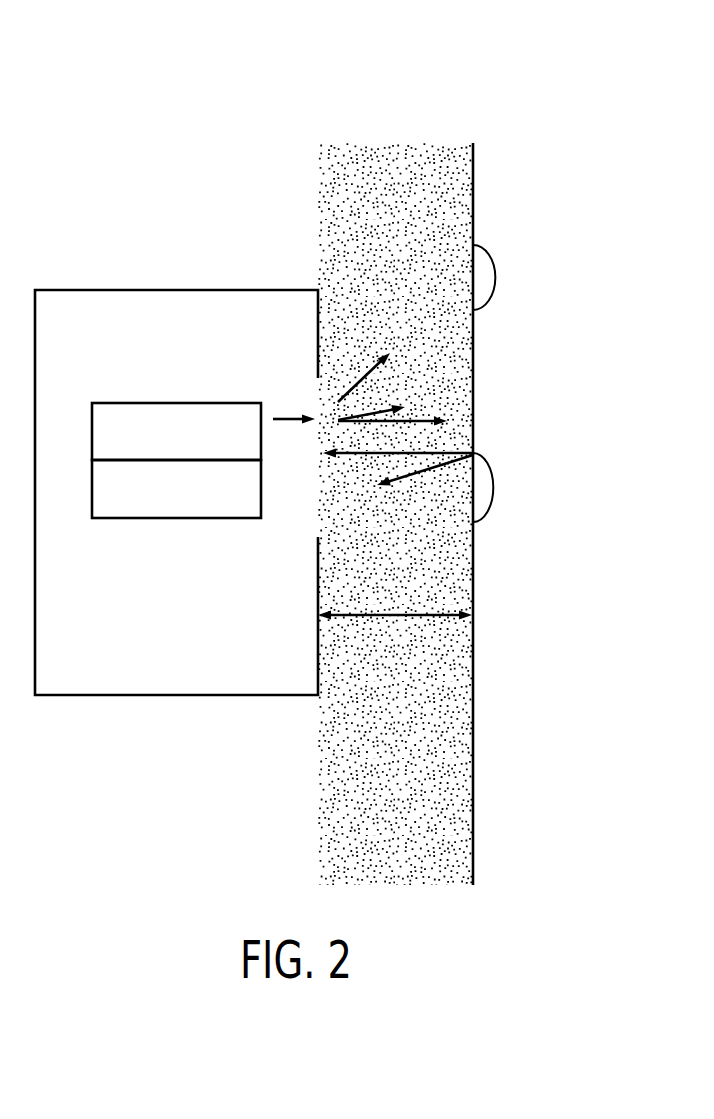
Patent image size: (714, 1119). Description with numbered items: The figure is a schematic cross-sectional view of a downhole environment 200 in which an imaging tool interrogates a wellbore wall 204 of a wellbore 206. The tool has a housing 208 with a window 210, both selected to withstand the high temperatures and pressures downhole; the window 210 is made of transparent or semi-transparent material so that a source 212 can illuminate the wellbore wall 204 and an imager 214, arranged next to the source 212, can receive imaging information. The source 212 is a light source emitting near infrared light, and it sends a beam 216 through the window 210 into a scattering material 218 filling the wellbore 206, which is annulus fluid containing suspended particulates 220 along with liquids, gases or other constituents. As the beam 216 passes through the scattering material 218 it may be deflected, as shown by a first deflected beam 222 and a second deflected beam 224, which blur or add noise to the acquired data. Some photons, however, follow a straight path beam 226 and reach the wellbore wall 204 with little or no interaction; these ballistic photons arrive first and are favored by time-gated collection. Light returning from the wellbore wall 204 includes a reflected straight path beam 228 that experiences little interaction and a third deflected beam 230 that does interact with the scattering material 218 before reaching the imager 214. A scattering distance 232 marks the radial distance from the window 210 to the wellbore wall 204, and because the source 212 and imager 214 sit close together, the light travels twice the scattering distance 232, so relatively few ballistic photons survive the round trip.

The downhole environment 200 is at (333, 483).
The wellbore wall 204 is at (473, 207).
The wellbore 206 is at (426, 909).
The housing 208 is at (175, 695).
The window 210 is at (329, 376).
The source 212 is at (177, 402).
The imager 214 is at (175, 518).
The beam 216 is at (287, 422).
The scattering material 218 is at (382, 157).
The suspended particulates 220 is at (460, 773).
The first deflected beam 222 is at (356, 389).
The second deflected beam 224 is at (342, 397).
The straight path beam 226 is at (412, 420).
The reflected straight path beam 228 is at (440, 450).
The third deflected beam 230 is at (436, 467).
The scattering distance 232 is at (427, 615).